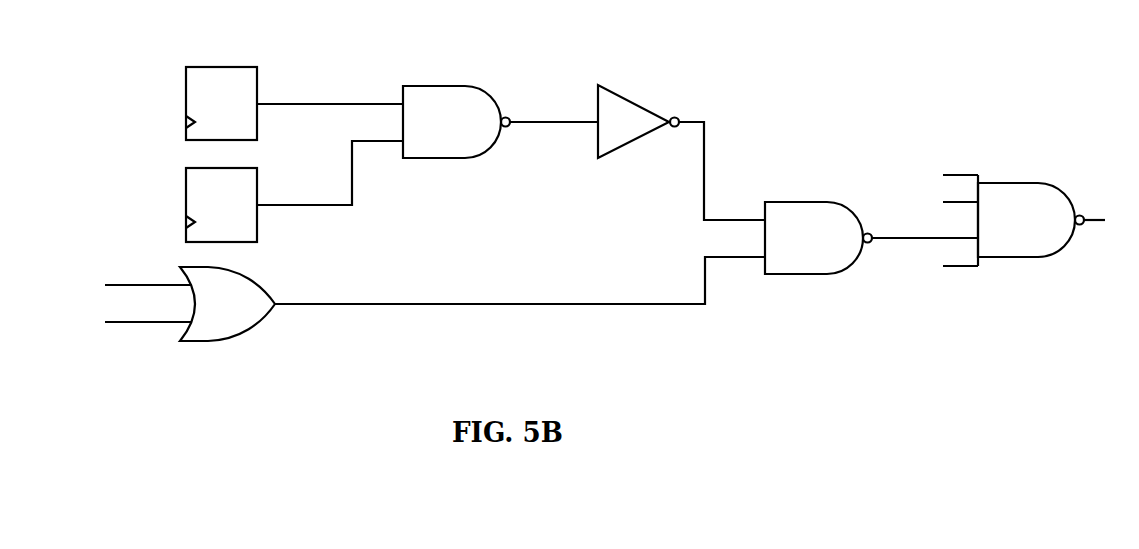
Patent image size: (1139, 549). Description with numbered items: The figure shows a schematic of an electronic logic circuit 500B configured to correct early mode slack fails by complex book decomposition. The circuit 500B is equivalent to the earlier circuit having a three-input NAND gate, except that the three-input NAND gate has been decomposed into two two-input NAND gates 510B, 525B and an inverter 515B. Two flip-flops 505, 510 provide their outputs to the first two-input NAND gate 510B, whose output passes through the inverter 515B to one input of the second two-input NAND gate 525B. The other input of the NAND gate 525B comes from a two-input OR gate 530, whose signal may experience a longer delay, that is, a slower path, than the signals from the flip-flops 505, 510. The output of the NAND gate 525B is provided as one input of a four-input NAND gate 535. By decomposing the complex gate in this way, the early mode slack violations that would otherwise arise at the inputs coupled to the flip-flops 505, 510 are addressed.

The electronic logic circuit 500B is at (948, 57).
The flip-flop 505 is at (186, 100).
The flip-flop 510 is at (186, 200).
The 2-input NAND gate 510B is at (445, 158).
The inverter 515B is at (630, 100).
The 2-input NAND gate 525B is at (786, 202).
The 2-input OR gate 530 is at (235, 335).
The 4-input NAND gate 535 is at (1025, 257).